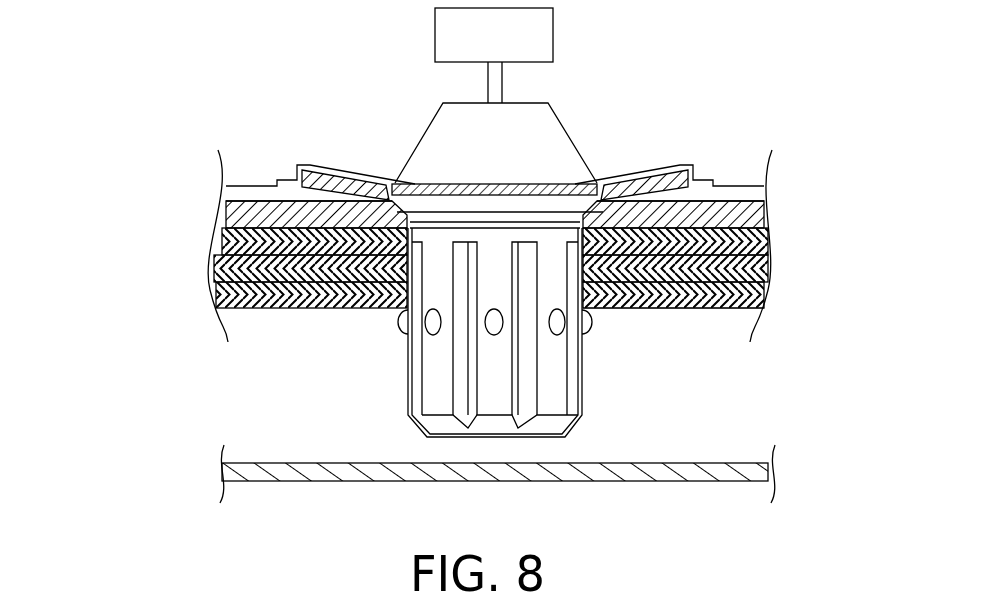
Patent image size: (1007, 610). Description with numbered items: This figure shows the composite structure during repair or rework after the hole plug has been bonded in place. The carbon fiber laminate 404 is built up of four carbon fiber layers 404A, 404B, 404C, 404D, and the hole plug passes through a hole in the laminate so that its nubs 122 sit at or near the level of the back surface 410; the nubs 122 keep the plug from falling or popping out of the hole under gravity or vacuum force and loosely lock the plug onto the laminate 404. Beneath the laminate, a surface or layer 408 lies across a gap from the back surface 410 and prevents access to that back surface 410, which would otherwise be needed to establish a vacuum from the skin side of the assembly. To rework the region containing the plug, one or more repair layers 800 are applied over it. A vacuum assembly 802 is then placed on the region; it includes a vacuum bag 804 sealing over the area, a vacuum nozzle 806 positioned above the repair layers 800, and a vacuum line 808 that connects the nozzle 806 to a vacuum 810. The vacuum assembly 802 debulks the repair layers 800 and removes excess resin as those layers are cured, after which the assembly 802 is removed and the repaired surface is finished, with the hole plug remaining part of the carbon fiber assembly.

The vacuum assembly 802 is at (627, 75).
The vacuum 810 is at (435, 33).
The vacuum line 808 is at (503, 81).
The vacuum nozzle 806 is at (441, 128).
The repair layers 800 is at (334, 172).
The vacuum bag 804 is at (647, 172).
The carbon fiber laminate 404 is at (128, 200).
The carbon fiber layer 404A is at (224, 215).
The carbon fiber layer 404B is at (222, 242).
The carbon fiber layer 404C is at (216, 268).
The carbon fiber layer 404D is at (216, 295).
The back surface 410 is at (667, 311).
The nubs 122 is at (400, 321).
The layer 408 is at (306, 482).